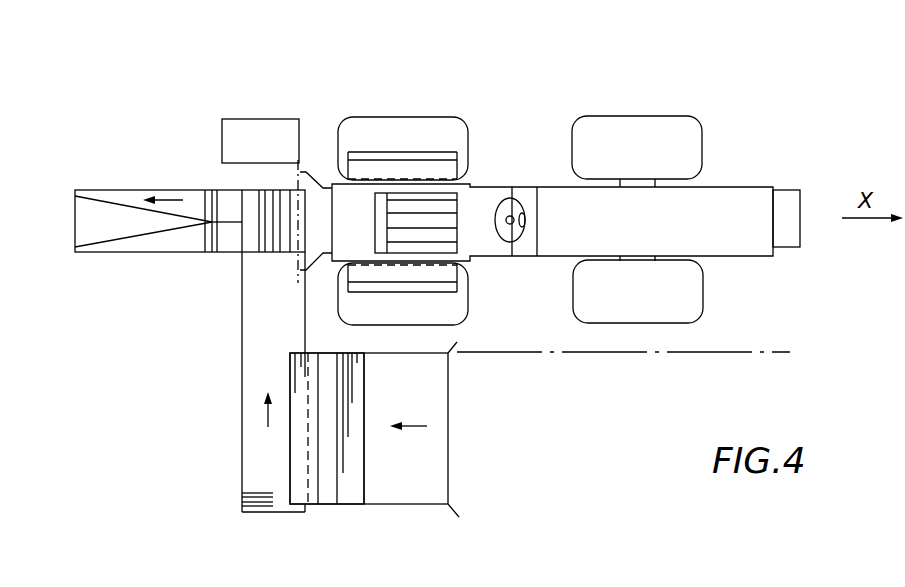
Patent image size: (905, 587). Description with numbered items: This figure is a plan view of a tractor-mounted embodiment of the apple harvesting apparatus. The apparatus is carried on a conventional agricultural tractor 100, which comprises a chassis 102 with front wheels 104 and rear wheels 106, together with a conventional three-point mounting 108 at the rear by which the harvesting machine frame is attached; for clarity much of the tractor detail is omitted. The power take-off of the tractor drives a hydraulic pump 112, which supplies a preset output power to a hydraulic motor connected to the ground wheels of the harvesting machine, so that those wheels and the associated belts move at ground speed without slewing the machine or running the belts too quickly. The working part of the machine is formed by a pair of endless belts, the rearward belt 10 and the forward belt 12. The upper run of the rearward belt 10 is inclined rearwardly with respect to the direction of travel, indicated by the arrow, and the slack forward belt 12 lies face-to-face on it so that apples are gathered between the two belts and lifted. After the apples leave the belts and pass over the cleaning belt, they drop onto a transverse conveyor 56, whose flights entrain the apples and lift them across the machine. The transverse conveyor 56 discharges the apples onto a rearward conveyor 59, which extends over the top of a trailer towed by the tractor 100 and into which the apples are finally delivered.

The rearward belt 10 is at (328, 515).
The forward belt 12 is at (425, 475).
The transverse conveyor 56 is at (263, 383).
The rearward conveyor 59 is at (167, 243).
The agricultural tractor 100 is at (752, 178).
The chassis 102 is at (747, 240).
The front wheels 104 is at (680, 117).
The rear wheels 106 is at (432, 137).
The three-point mounting 108 is at (313, 176).
The hydraulic pump 112 is at (245, 119).